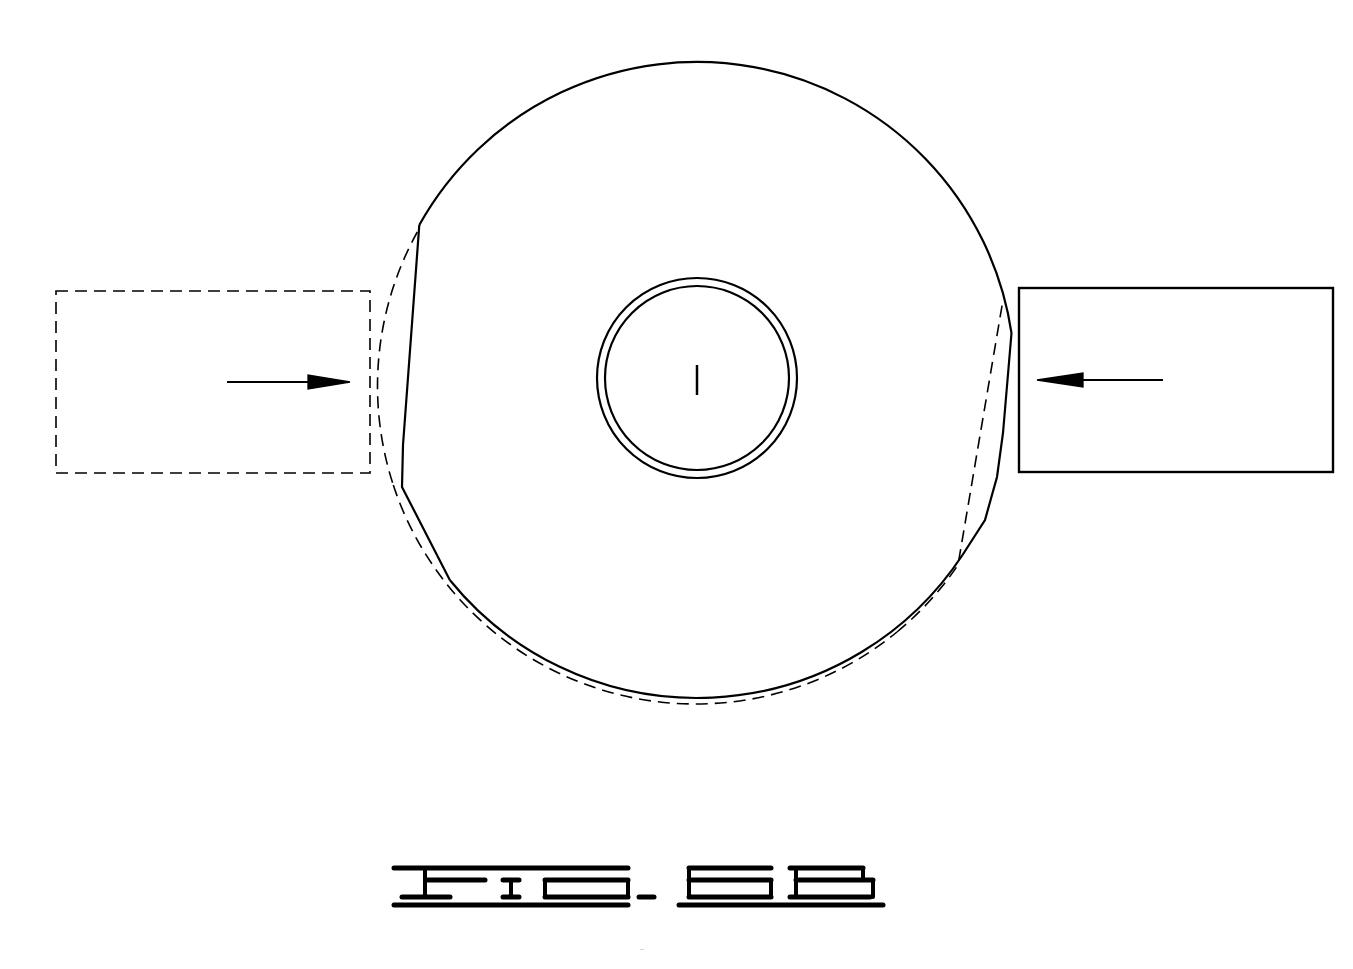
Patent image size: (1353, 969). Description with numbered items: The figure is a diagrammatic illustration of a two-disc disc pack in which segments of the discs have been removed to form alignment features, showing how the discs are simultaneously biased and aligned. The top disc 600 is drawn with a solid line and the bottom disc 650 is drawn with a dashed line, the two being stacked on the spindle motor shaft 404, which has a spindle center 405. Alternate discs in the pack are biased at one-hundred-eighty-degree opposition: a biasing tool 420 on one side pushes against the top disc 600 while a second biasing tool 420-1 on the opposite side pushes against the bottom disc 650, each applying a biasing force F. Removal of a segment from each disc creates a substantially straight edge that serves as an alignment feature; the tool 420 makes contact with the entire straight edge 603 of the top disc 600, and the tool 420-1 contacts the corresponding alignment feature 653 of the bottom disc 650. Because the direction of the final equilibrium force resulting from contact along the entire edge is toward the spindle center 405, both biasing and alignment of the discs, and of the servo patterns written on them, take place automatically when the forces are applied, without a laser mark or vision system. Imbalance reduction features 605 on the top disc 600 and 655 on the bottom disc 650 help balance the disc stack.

The top disc 600 is at (847, 95).
The imbalance reduction feature 605 is at (402, 443).
The substantially straight edge 603 is at (1003, 432).
The alignment feature 653 is at (400, 278).
The bottom disc 650 is at (495, 635).
The imbalance reduction feature 655 is at (967, 502).
The spindle motor shaft 404 is at (718, 310).
The spindle center 405 is at (695, 363).
The biasing tool 420-1 is at (258, 288).
The biasing tool 420 is at (1180, 288).